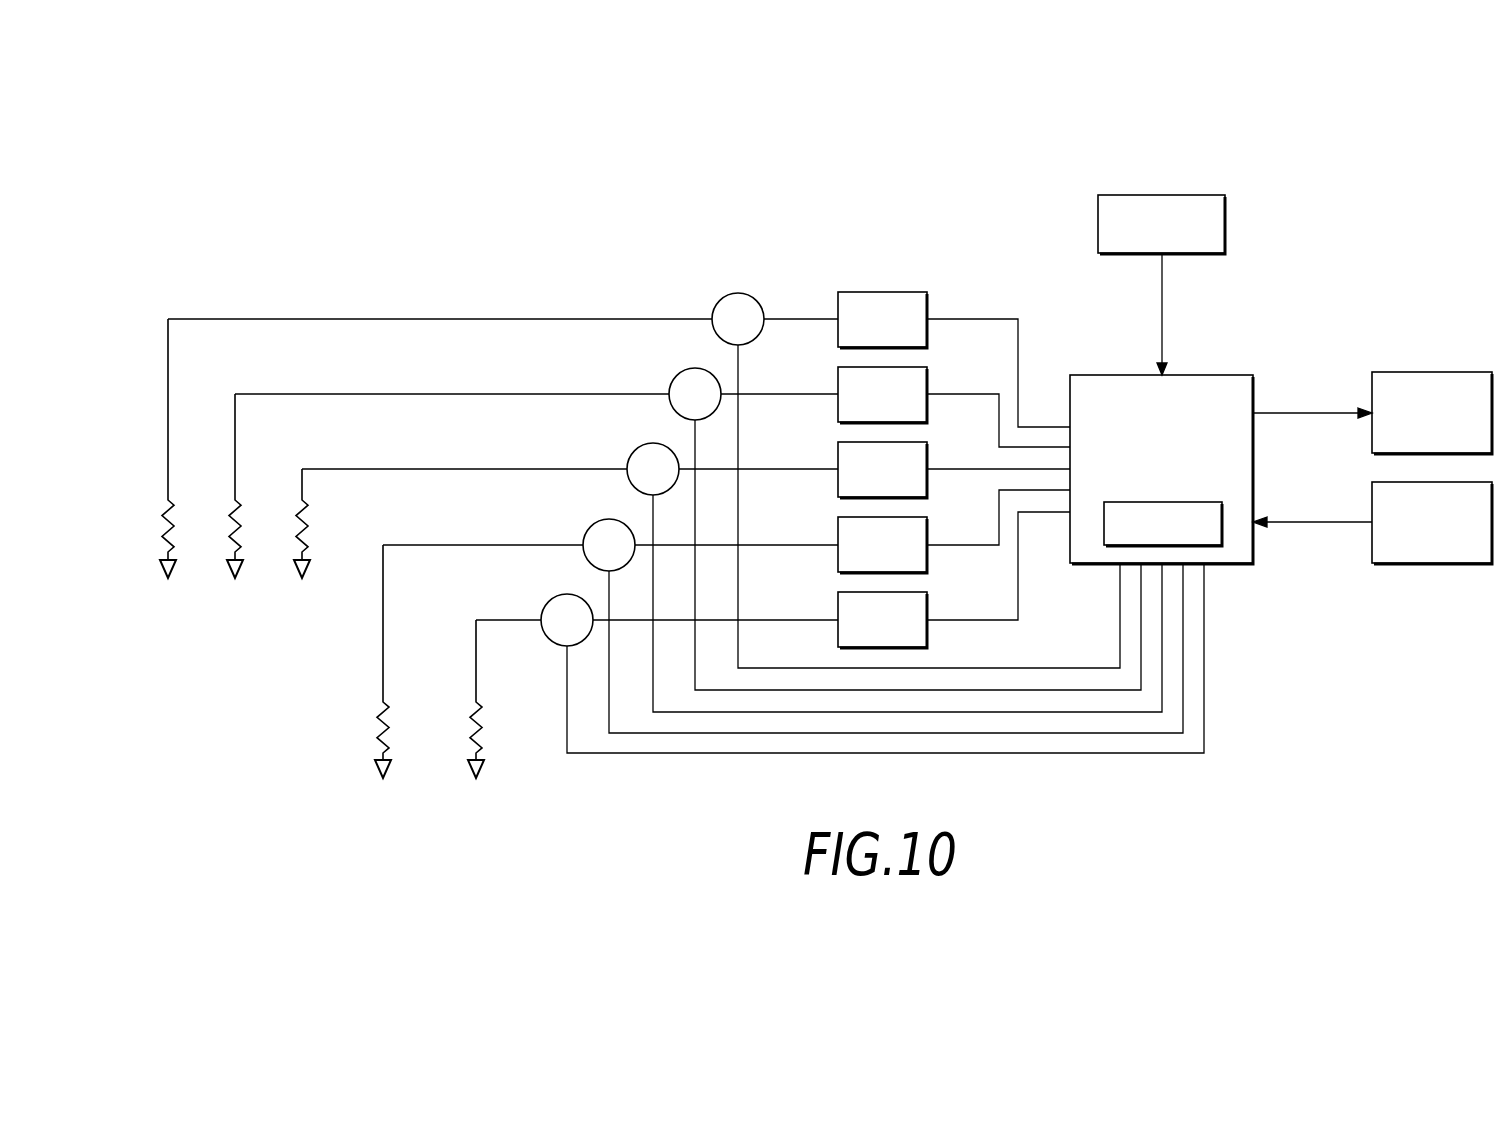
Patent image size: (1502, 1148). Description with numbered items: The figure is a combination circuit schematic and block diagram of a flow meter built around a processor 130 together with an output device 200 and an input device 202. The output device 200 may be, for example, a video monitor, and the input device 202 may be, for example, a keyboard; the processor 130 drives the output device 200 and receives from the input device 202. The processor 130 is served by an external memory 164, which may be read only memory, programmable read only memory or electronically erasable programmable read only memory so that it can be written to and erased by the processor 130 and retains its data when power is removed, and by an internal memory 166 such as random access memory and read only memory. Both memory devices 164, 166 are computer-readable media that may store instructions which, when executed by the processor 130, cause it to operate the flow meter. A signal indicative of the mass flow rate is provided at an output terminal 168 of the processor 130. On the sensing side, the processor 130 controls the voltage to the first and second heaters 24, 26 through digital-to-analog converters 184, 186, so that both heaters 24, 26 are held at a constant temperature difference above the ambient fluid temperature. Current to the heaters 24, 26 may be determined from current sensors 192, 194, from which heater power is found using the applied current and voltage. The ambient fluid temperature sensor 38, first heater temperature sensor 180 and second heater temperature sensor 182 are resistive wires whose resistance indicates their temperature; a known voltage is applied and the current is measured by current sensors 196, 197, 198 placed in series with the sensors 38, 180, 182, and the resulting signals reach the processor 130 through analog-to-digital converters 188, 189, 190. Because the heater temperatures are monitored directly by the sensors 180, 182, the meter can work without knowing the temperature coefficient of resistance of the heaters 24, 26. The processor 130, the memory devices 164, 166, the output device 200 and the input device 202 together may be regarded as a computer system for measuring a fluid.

The first heater 24 is at (172, 507).
The second heater 26 is at (239, 520).
The ambient fluid temperature sensor 38 is at (306, 532).
The processor 130 is at (1218, 375).
The external memory 164 is at (1160, 195).
The internal memory 166 is at (1190, 502).
The output terminal 168 is at (1256, 416).
The first heater temperature sensor 180 is at (380, 705).
The second heater temperature sensor 182 is at (473, 728).
The digital-to-analog converter 184 is at (930, 303).
The digital-to-analog converter 186 is at (930, 378).
The analog-to-digital converter 188 is at (930, 453).
The analog-to-digital converter 189 is at (930, 528).
The analog-to-digital converter 190 is at (930, 603).
The current sensor 192 is at (723, 296).
The current sensor 194 is at (681, 372).
The current sensor 196 is at (639, 447).
The current sensor 197 is at (595, 523).
The current sensor 198 is at (553, 598).
The output device 200 is at (1425, 372).
The input device 202 is at (1420, 563).